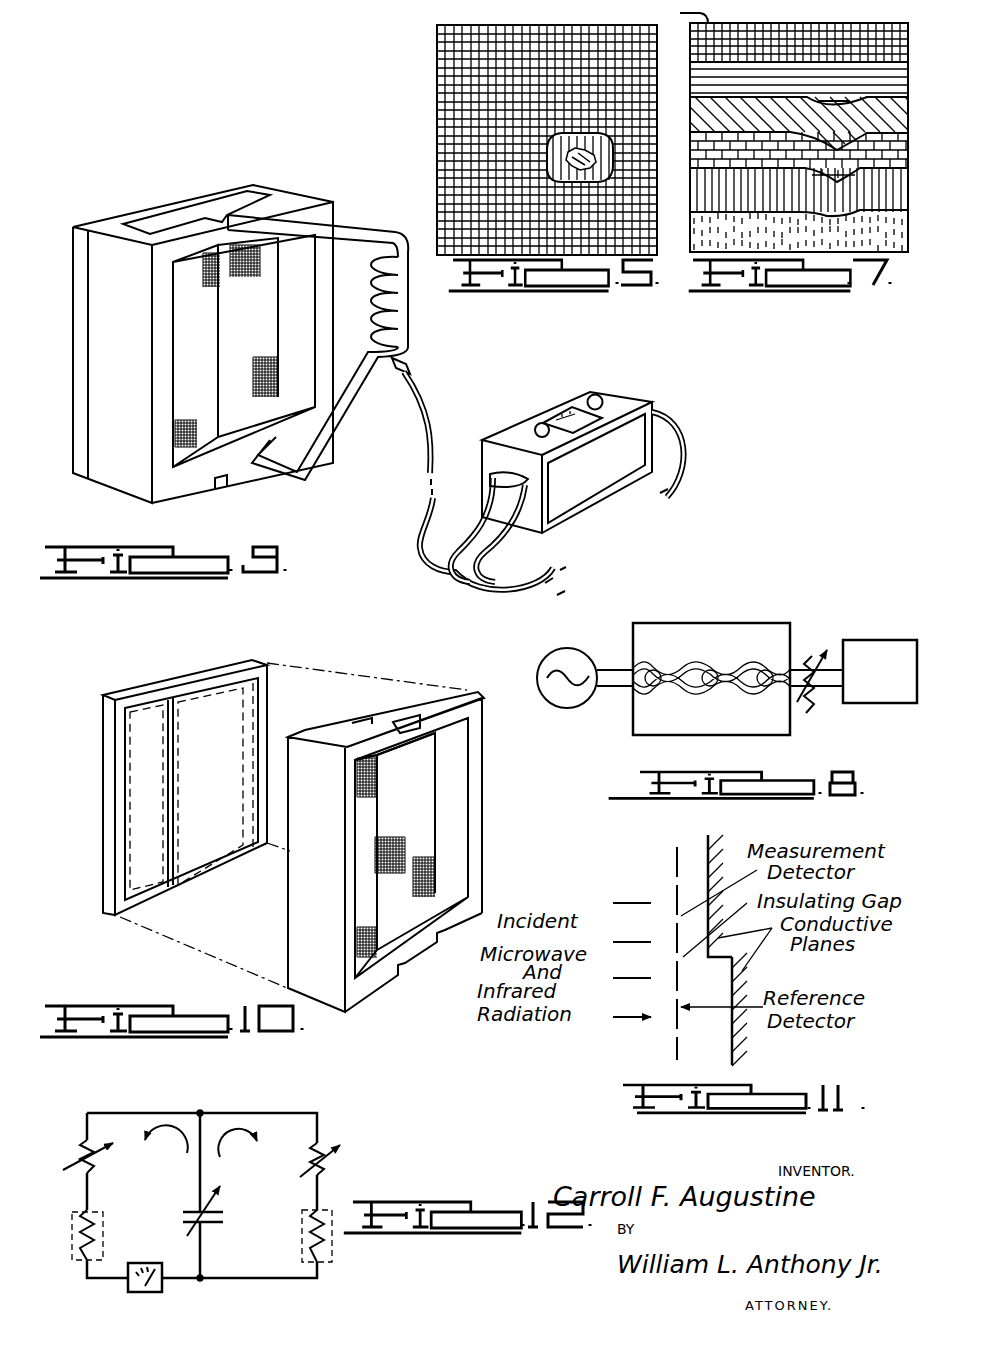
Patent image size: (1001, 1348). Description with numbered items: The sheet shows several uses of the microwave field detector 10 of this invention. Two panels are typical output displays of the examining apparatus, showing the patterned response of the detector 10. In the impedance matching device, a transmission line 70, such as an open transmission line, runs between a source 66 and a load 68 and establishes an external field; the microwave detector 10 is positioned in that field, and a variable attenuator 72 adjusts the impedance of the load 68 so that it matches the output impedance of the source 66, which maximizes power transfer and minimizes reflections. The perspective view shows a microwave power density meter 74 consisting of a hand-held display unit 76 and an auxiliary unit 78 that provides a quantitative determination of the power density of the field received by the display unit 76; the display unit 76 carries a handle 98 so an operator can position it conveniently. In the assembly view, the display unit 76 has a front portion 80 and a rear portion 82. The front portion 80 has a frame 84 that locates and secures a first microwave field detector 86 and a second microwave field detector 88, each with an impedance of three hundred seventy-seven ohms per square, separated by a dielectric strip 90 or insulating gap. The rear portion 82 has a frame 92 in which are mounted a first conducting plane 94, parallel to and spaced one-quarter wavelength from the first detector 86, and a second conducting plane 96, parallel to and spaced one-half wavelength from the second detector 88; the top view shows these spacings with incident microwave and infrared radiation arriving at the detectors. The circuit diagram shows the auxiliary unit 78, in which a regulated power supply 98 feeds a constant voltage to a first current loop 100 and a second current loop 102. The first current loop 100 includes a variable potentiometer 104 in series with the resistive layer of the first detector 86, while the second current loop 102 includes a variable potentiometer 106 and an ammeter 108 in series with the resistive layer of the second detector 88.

In FIG. 5, the microwave detector 10 is at (433, 42).
In FIG. 7, the microwave detector 10 is at (690, 258).
In FIG. 8, the microwave detector 10 is at (723, 622).
In FIG. 8, the source 66 is at (563, 650).
In FIG. 8, the load 68 is at (877, 703).
In FIG. 8, the transmission line 70 is at (617, 687).
In FIG. 8, the variable attenuator 72 is at (800, 725).
In FIG. 9, the power density meter 74 is at (498, 405).
In FIG. 9, the hand-held display unit 76 is at (153, 222).
In FIG. 10, the hand-held display unit 76 is at (337, 708).
In FIG. 9, the auxiliary unit 78 is at (629, 402).
In FIG. 12, the auxiliary unit 78 is at (238, 1193).
In FIG. 10, the front portion 80 is at (153, 777).
In FIG. 10, the rear portion 82 is at (424, 821).
In FIG. 10, the frame 84 is at (107, 770).
In FIG. 10, the first microwave field detector 86 is at (232, 760).
In FIG. 11, the first microwave field detector 86 is at (677, 882).
In FIG. 12, the first microwave field detector 86 is at (333, 1207).
In FIG. 10, the second microwave field detector 88 is at (168, 817).
In FIG. 11, the second microwave field detector 88 is at (673, 1020).
In FIG. 12, the second microwave field detector 88 is at (103, 1221).
In FIG. 10, the dielectric strip 90 is at (170, 873).
In FIG. 10, the frame 92 is at (481, 782).
In FIG. 10, the first conducting plane 94 is at (424, 823).
In FIG. 11, the first conducting plane 94 is at (708, 850).
In FIG. 10, the second conducting plane 96 is at (360, 882).
In FIG. 11, the second conducting plane 96 is at (738, 1068).
In FIG. 9, the handle 98 is at (371, 240).
In FIG. 12, the handle 98 is at (210, 1221).
In FIG. 12, the first current loop 100 is at (290, 1183).
In FIG. 12, the second current loop 102 is at (173, 1183).
In FIG. 12, the variable potentiometer 104 is at (323, 1143).
In FIG. 12, the variable potentiometer 106 is at (84, 1140).
In FIG. 12, the ammeter 108 is at (158, 1292).